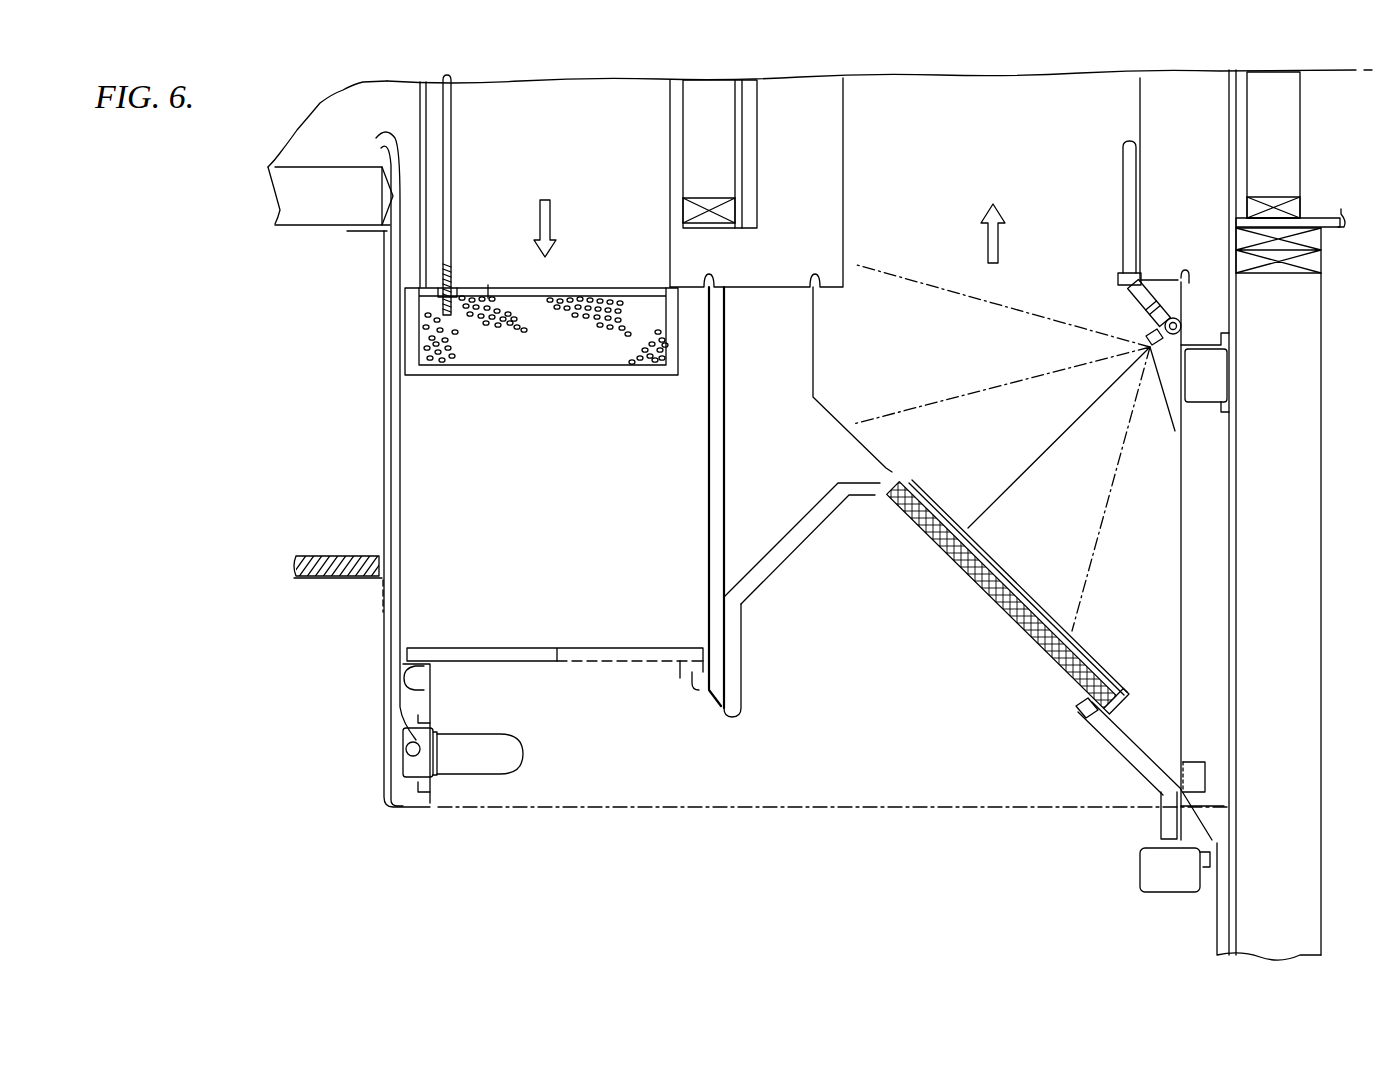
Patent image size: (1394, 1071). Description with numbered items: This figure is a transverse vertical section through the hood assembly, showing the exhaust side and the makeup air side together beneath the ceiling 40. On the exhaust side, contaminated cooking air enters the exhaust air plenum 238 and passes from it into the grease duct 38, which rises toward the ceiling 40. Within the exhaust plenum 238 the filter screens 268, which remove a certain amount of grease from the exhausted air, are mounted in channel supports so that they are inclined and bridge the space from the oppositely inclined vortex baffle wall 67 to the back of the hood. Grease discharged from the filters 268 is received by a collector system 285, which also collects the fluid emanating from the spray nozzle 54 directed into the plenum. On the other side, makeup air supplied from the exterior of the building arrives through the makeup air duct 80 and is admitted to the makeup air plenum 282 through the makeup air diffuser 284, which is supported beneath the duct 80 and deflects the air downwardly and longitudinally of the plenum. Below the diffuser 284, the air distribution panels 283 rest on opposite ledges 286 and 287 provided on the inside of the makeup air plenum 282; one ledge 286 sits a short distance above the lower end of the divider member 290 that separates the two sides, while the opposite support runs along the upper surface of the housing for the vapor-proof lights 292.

The ceiling 40 is at (302, 228).
The makeup air duct 80 is at (672, 205).
The grease duct 38 is at (845, 197).
The spray nozzle 54 is at (1146, 337).
The exhaust air plenum 238 is at (1148, 548).
The makeup air diffuser 284 is at (585, 360).
The makeup air plenum 282 is at (412, 472).
The makeup air panels 283 is at (548, 648).
The ledge 287 is at (424, 684).
The ledge 286 is at (692, 672).
The vapor-proof lights 292 is at (503, 752).
The divider member 290 is at (737, 708).
The vortex baffle wall 67 is at (793, 538).
The filter screens 268 is at (992, 612).
The collector system 285 is at (1137, 758).